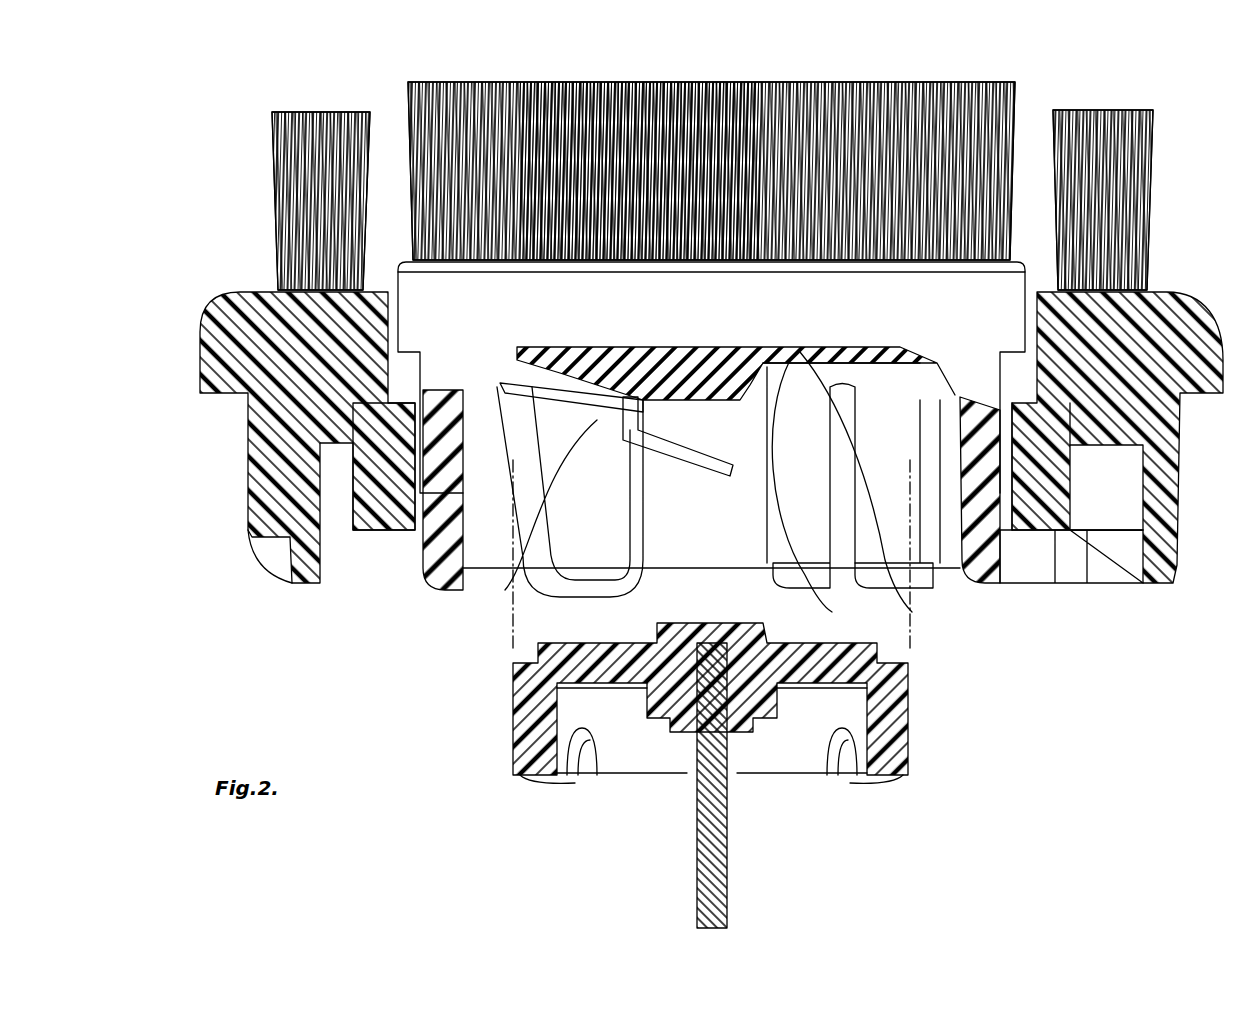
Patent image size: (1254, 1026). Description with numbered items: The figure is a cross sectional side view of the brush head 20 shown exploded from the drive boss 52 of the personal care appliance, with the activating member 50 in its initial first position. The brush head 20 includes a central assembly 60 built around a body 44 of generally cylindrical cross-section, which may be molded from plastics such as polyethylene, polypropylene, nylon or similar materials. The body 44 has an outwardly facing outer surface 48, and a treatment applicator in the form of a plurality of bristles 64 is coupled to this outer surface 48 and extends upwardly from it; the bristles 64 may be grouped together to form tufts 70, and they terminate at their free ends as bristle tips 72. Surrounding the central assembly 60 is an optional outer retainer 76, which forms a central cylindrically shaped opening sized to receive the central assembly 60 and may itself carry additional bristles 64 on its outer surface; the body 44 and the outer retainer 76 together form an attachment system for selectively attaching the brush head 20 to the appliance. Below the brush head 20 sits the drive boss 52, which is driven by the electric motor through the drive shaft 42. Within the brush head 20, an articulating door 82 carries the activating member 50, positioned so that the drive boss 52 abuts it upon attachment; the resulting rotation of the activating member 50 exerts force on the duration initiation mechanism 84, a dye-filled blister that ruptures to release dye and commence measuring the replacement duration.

The brush head 20 is at (150, 272).
The drive shaft 42 is at (727, 850).
The body 44 is at (1018, 283).
The outer surface 48 is at (465, 258).
The activating member 50 is at (515, 590).
The drive boss 52 is at (512, 718).
The central assembly 60 is at (705, 149).
The bristles 64 is at (292, 112).
The tufts 70 is at (452, 80).
The bristle tips 72 is at (556, 82).
The outer retainer 76 is at (1175, 312).
The articulating door 82 is at (878, 501).
The duration initiation mechanism 84 is at (816, 493).